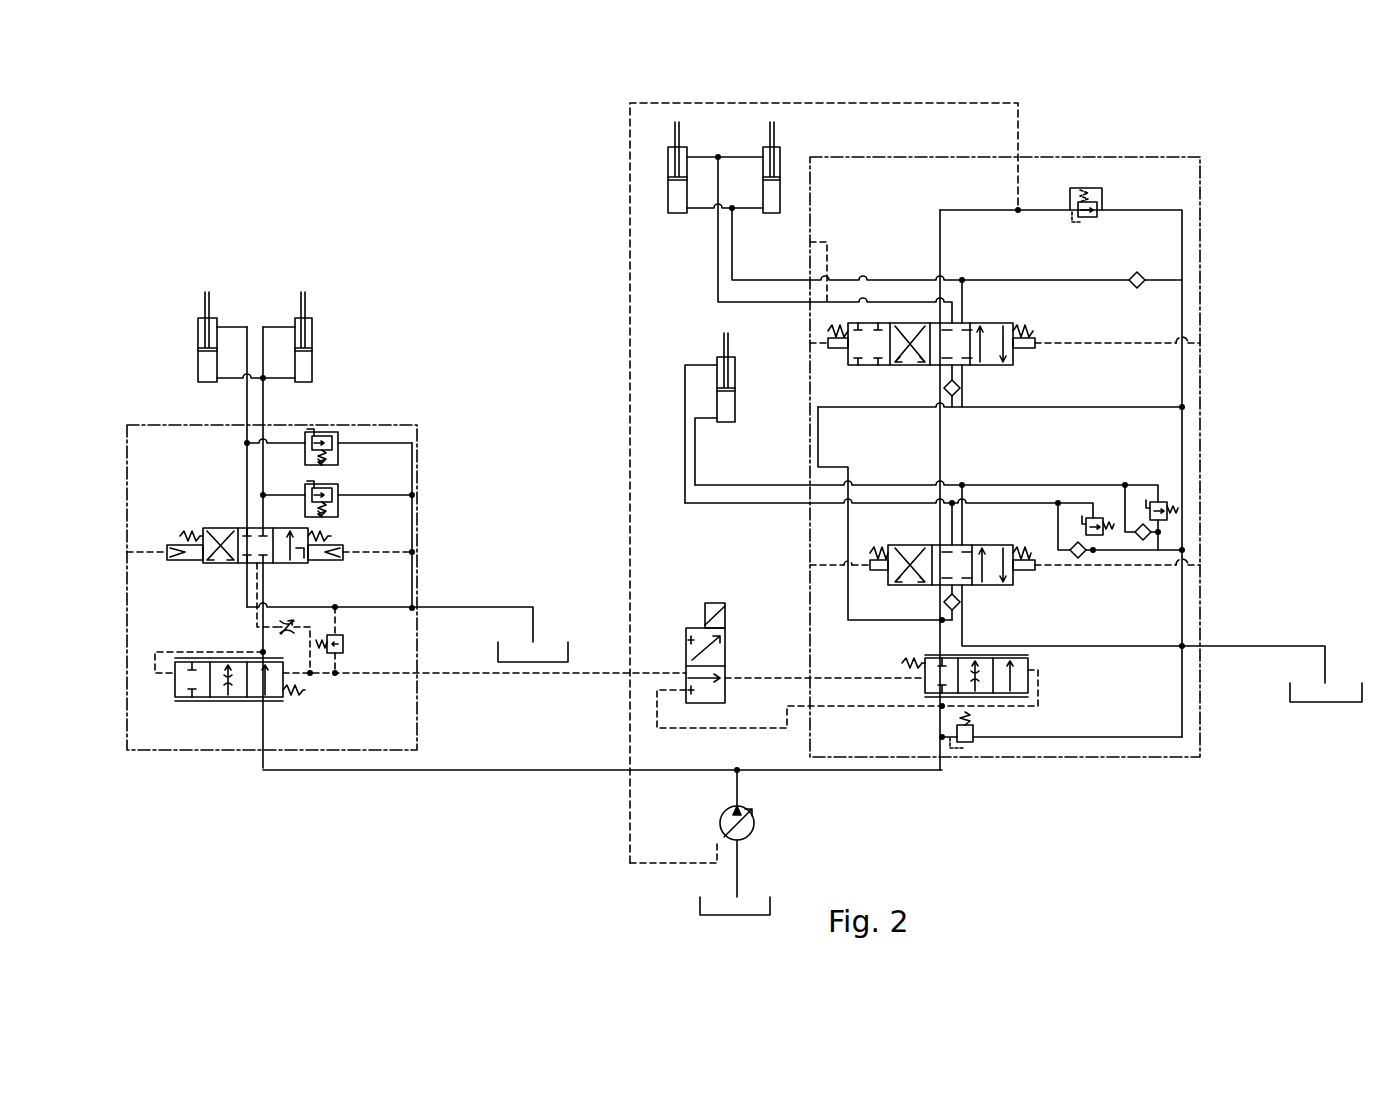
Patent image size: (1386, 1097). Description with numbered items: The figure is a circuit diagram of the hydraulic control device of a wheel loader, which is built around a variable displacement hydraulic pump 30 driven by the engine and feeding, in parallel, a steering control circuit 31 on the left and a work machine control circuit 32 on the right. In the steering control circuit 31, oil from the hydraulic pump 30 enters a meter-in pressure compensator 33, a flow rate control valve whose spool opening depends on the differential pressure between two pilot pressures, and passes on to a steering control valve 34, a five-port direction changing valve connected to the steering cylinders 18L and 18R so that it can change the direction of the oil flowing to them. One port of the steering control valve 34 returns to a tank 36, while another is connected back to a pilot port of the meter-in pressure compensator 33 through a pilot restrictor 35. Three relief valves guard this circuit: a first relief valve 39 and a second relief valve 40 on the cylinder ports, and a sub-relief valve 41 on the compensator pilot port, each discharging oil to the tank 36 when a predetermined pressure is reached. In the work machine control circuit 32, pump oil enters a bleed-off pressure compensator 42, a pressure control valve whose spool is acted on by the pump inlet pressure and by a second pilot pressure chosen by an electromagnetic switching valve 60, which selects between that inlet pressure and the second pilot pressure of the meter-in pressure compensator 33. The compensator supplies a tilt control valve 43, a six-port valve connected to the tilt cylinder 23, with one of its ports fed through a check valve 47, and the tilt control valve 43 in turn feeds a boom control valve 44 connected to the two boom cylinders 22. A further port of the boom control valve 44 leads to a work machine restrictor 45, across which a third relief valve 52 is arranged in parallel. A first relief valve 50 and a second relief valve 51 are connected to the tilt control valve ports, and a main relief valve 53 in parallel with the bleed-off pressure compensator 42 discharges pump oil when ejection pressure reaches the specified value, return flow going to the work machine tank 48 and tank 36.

The steering cylinder 18L is at (198, 350).
The steering cylinder 18R is at (305, 362).
The boom cylinder 22 is at (765, 150).
The tilt cylinder 23 is at (735, 398).
The hydraulic pump 30 is at (755, 826).
The steering control circuit 31 is at (409, 425).
The work machine control circuit 32 is at (1182, 168).
The meter-in pressure compensator 33 is at (180, 683).
The steering control valve 34 is at (207, 563).
The pilot restrictor 35 is at (292, 622).
The tank 36 is at (552, 655).
The first relief valve 39 is at (322, 432).
The second relief valve 40 is at (335, 487).
The sub-relief valve 41 is at (343, 643).
The bleed-off pressure compensator 42 is at (1028, 662).
The tilt control valve 43 is at (1013, 582).
The boom control valve 44 is at (1012, 323).
The work machine restrictor 45 is at (1085, 188).
The check valve 47 is at (957, 600).
The work machine tank 48 is at (1340, 690).
The first relief valve 50 is at (1160, 500).
The second relief valve 51 is at (1098, 535).
The third relief valve 52 is at (1090, 220).
The main relief valve 53 is at (970, 745).
The electromagnetic switching valve 60 is at (692, 628).